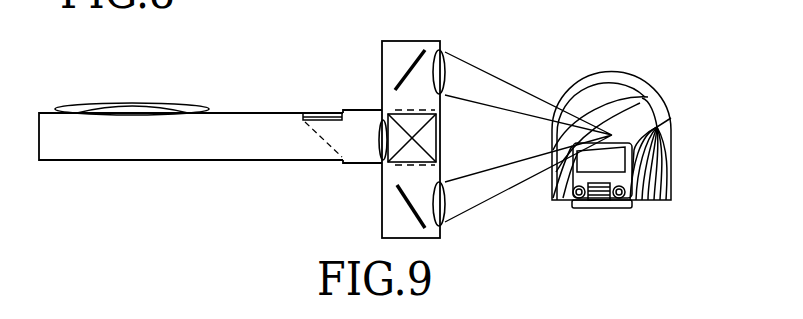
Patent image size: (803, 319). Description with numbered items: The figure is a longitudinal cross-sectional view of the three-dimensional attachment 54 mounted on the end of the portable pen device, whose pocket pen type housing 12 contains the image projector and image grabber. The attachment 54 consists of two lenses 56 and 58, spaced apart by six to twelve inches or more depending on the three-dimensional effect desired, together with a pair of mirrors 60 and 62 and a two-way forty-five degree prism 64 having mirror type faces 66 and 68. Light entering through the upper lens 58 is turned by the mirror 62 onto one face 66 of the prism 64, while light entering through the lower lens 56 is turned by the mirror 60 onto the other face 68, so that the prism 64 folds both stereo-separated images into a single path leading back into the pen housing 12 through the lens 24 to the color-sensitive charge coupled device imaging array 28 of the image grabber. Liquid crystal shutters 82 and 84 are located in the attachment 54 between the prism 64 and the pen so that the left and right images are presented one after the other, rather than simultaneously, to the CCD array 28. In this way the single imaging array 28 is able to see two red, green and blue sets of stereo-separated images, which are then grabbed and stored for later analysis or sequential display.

The pocket pen type housing 12 is at (140, 160).
The lens 24 is at (312, 147).
The charge coupled device (CCD) imaging array 28 is at (318, 113).
The 3-D attachment 54 is at (411, 41).
The lens 56 is at (443, 210).
The lens 58 is at (445, 63).
The mirror 60 is at (402, 210).
The mirror 62 is at (408, 67).
The two-way 45° prism 64 is at (442, 135).
The mirror type face 66 is at (440, 123).
The mirror type face 68 is at (440, 152).
The Liquid Crystal shutter 82 is at (396, 166).
The Liquid Crystal shutter 84 is at (398, 111).